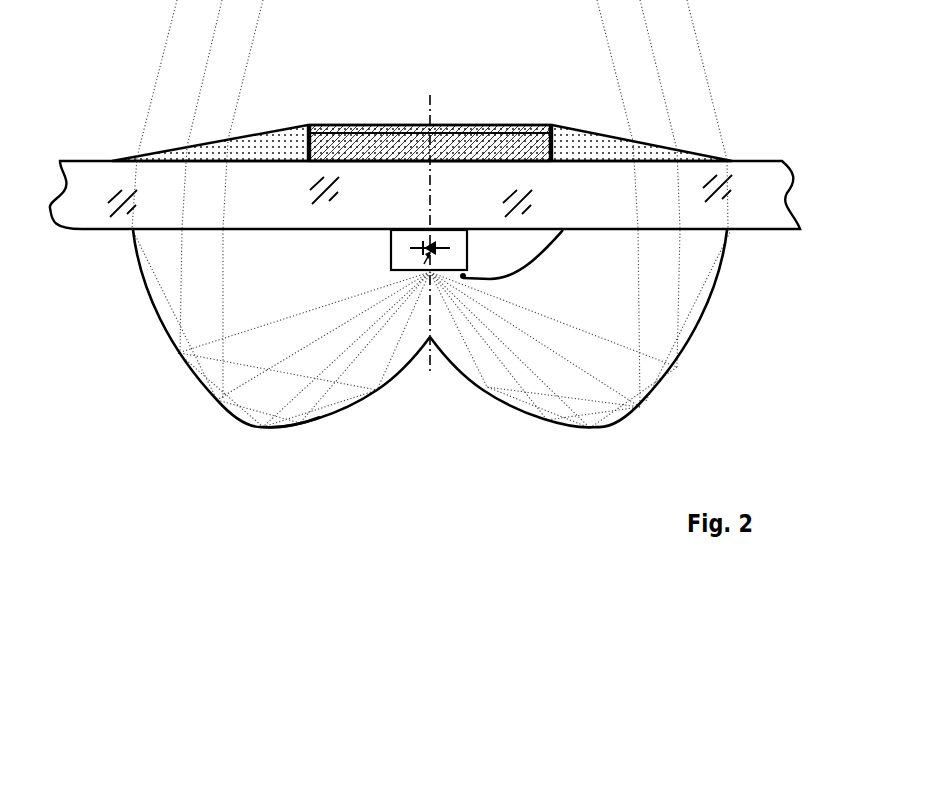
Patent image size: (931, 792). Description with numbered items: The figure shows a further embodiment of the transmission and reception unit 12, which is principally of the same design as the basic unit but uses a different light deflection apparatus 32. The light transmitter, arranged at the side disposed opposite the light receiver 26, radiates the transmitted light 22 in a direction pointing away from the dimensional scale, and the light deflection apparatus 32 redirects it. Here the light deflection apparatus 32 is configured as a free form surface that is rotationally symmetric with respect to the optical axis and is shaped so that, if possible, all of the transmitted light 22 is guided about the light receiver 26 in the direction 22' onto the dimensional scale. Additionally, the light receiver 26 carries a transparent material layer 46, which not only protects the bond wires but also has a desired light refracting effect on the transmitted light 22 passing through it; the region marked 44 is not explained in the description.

The transmission and reception unit 12 is at (136, 407).
The transmitted light 22 is at (424, 270).
The direction of deflected transmitted light 22' is at (431, 214).
The light receiver 26 is at (475, 148).
The light deflection apparatus 32 is at (155, 320).
The lens bottom surface 44 is at (290, 423).
The transparent material layer 46 is at (295, 140).